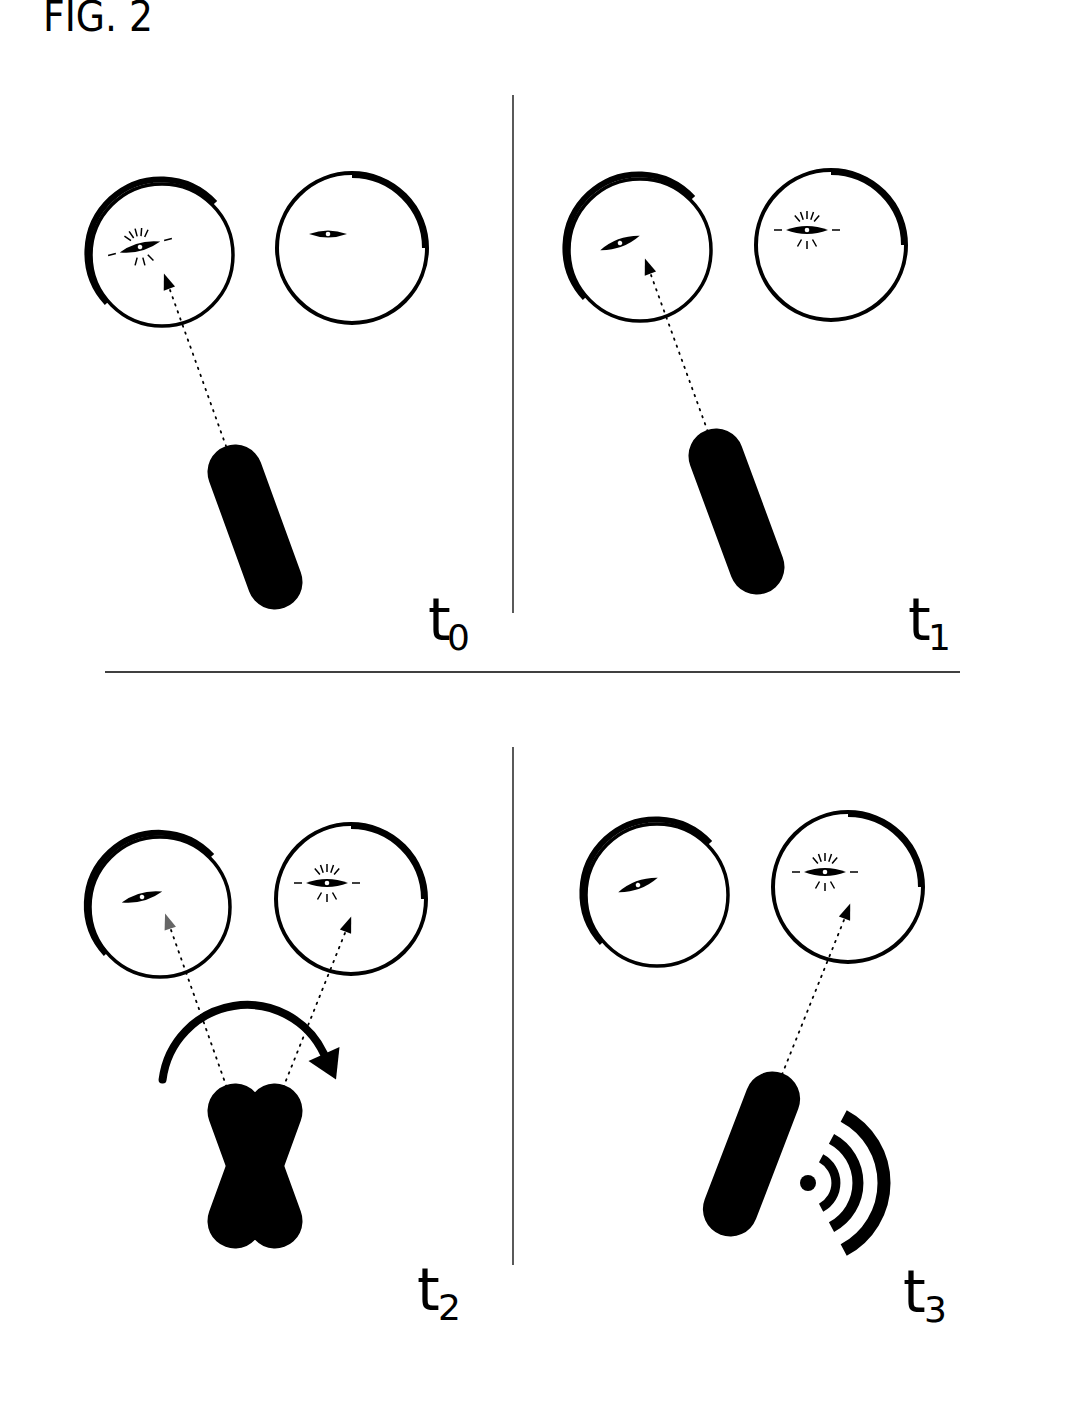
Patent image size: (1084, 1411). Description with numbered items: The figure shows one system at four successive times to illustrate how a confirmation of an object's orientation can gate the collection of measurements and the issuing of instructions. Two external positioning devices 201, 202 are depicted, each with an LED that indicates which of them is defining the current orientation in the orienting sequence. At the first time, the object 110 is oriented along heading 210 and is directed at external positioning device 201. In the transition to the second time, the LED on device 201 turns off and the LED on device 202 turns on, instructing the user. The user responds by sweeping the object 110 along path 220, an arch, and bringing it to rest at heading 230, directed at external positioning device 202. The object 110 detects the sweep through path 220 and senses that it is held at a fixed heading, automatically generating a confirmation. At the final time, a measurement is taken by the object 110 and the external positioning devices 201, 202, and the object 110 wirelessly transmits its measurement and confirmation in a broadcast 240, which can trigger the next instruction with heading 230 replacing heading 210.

The external positioning device 201 is at (178, 185).
The external positioning device 202 is at (378, 177).
The object 110 is at (227, 532).
The heading 210 is at (443, 351).
The path 220 is at (270, 997).
The heading 230 is at (570, 994).
The broadcast 240 is at (947, 1152).